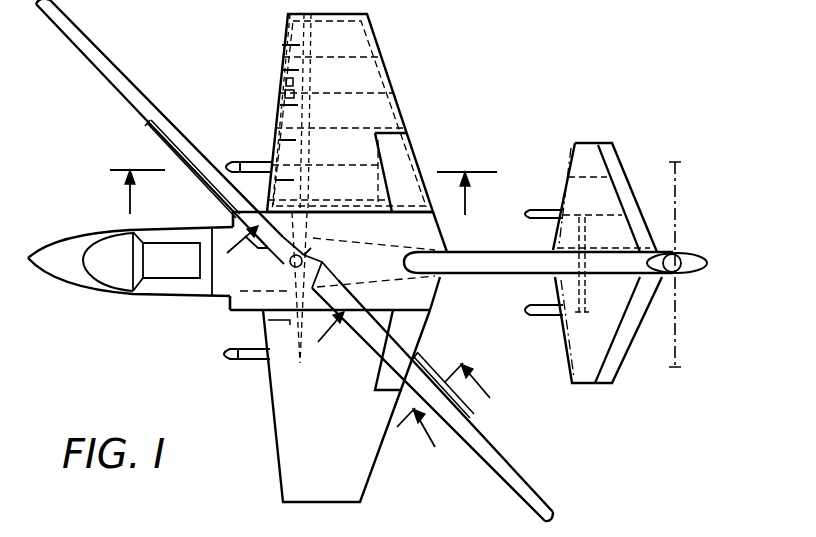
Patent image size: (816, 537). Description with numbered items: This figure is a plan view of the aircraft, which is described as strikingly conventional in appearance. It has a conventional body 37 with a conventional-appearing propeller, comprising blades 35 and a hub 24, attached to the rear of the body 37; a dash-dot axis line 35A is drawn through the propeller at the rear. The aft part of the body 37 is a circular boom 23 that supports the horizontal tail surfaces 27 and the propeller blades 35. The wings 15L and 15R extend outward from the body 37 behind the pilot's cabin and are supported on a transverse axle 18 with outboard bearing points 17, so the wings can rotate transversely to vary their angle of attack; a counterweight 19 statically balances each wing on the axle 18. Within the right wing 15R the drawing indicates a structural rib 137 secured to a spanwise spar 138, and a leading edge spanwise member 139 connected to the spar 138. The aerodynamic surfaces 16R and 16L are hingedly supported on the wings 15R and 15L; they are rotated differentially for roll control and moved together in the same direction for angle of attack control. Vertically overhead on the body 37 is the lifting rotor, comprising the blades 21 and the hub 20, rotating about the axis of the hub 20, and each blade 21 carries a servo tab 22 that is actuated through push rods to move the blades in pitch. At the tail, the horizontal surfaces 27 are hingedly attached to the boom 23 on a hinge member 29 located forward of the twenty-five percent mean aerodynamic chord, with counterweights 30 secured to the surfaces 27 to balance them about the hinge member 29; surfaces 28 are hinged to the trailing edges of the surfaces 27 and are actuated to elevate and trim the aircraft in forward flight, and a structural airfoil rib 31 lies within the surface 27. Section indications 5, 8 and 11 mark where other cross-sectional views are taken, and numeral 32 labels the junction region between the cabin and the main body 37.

The section line 5- 5 is at (303, 196).
The section line 8- 8 is at (285, 297).
The section line 11- 11 is at (457, 415).
The right wing 15R is at (372, 28).
The left wing 15L is at (362, 483).
The aerodynamic surface 16R is at (403, 150).
The aerodynamic surface 16L is at (430, 334).
The bearing 17 is at (300, 364).
The transverse axle 18 is at (290, 325).
The counterweight 19 is at (240, 162).
The rotor hub 20 is at (306, 260).
The rotor blades 21 is at (98, 62).
The servo tab 22 is at (146, 140).
The circular boom 23 is at (468, 257).
The propeller hub 24 is at (697, 260).
The horizontal tail surfaces 27 is at (588, 375).
The elevating surfaces 28 is at (613, 370).
The hinge member 29 is at (578, 313).
The counterweights 30 is at (536, 307).
The structural airfoil rib 31 is at (590, 175).
The fuselage 32 is at (226, 301).
The propeller blades 35 is at (675, 256).
The nozzle axis 35A is at (682, 182).
The body 37 is at (78, 276).
The structural rib 137 is at (350, 162).
The spanwise spar 138 is at (280, 82).
The leading edge spanwise member 139 is at (277, 95).